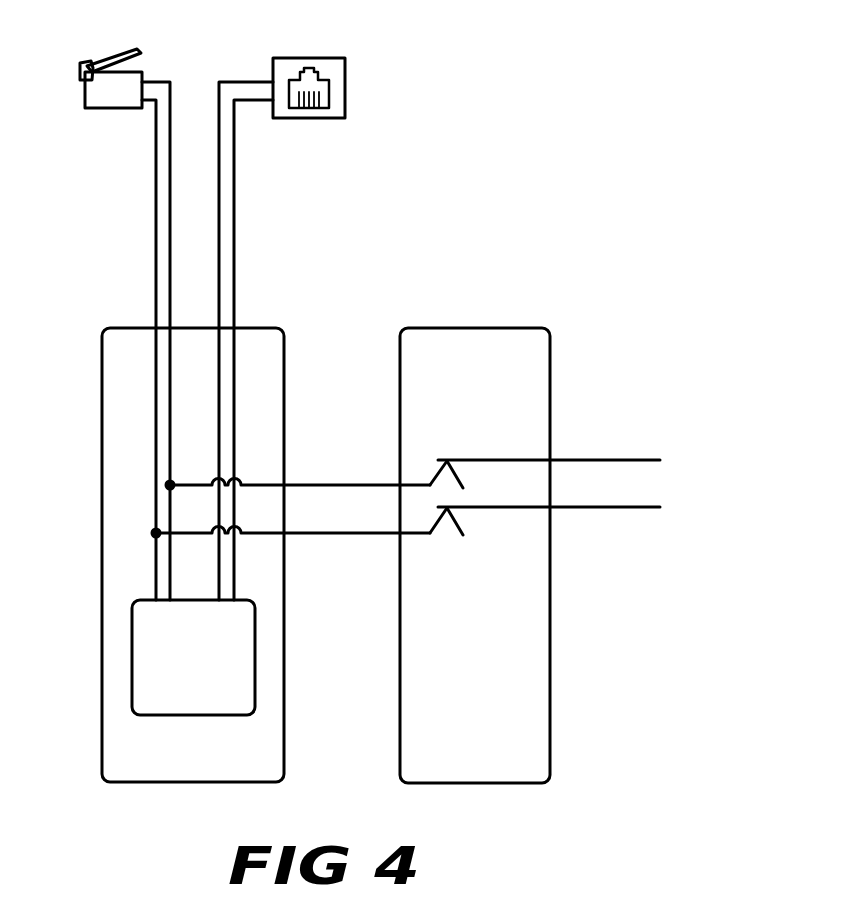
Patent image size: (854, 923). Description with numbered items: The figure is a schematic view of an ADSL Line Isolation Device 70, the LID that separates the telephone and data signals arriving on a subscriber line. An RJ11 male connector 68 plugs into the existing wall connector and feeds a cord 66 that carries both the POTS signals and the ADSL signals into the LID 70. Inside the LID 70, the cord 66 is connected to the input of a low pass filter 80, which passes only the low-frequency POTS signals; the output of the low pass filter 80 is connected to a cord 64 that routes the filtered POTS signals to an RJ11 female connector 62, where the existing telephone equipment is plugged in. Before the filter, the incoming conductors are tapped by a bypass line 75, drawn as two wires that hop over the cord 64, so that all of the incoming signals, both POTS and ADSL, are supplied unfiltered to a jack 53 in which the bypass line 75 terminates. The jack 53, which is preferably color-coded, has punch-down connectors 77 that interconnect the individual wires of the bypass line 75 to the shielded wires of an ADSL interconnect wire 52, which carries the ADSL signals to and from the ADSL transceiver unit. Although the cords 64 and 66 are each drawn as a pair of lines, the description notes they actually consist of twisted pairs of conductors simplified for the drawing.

The ADSL interconnect wire 52 is at (638, 510).
The jack 53 is at (413, 328).
The RJ11 female connector 62 is at (308, 58).
The cord 64 is at (212, 216).
The cord 66 is at (148, 220).
The RJ11 male connector 68 is at (103, 58).
The ADSL Line Isolation Device 70 is at (255, 328).
The bypass line 75 is at (358, 485).
The punch-down connectors 77 is at (436, 470).
The low pass filter 80 is at (132, 648).